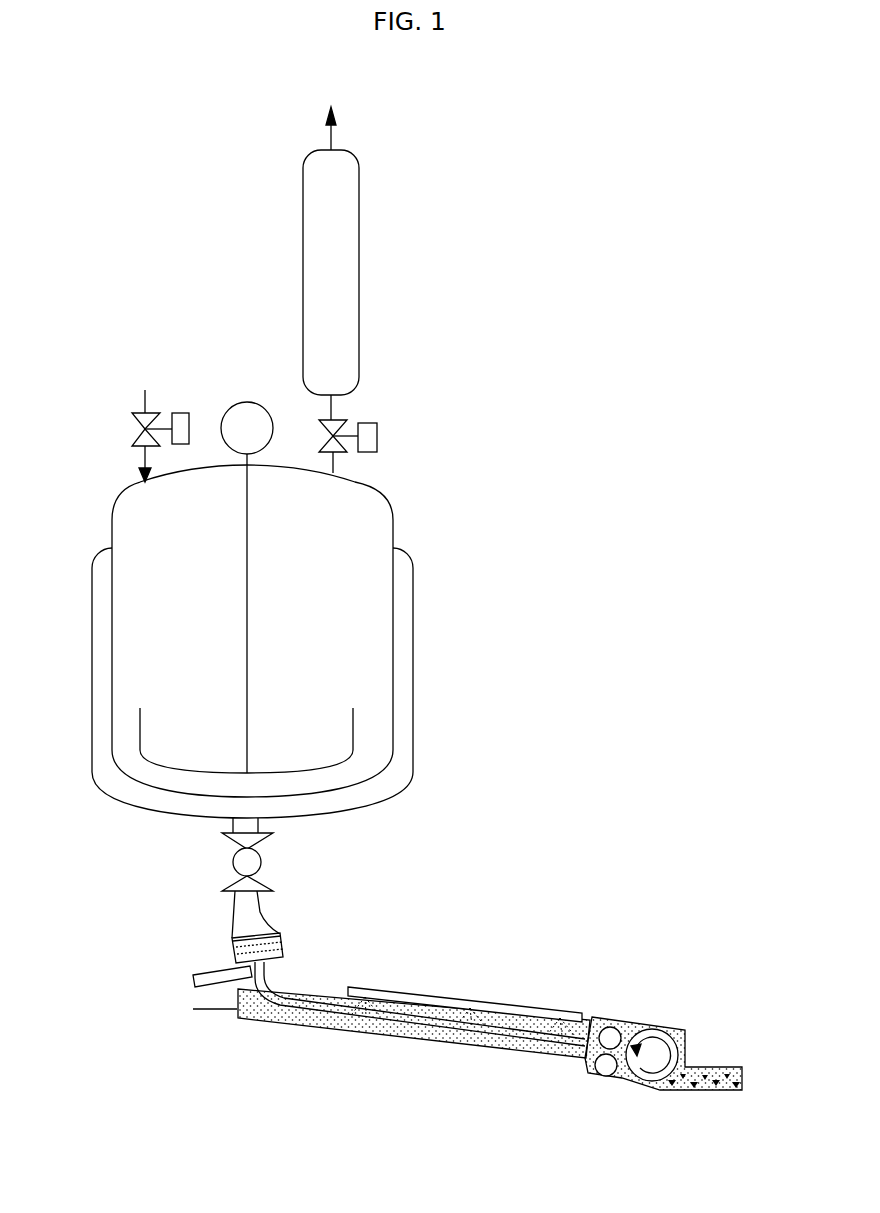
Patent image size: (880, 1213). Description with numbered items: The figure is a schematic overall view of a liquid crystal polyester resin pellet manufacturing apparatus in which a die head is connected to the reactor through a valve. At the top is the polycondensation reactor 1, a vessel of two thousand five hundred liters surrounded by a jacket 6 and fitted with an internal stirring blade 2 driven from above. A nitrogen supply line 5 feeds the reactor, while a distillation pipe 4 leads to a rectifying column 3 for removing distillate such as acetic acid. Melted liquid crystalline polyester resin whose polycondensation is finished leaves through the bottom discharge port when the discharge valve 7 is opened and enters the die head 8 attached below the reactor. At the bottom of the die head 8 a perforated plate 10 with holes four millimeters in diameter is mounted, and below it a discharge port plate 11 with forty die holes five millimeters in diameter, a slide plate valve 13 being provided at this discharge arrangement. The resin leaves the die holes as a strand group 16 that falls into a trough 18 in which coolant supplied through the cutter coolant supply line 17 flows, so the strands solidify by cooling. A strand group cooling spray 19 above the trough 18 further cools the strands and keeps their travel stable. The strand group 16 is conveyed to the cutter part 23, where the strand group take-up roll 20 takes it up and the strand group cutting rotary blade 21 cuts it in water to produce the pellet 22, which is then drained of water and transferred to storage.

The polycondensation reactor 1 is at (132, 505).
The stirring blade 2 is at (250, 565).
The rectifying column 3 is at (358, 270).
The distillation pipe 4 is at (335, 405).
The nitrogen supply line 5 is at (142, 398).
The jacket 6 is at (405, 672).
The discharge valve 7 is at (263, 862).
The die head 8 is at (270, 916).
The perforated plate 10 is at (232, 950).
The discharge port plate 11 is at (285, 945).
The slide plate valve 13 is at (193, 980).
The strand group 16 is at (267, 973).
The cutter coolant supply line 17 is at (200, 1012).
The trough 18 is at (295, 1023).
The strand group cooling spray 19 is at (440, 995).
The strand group take-up roll 20 is at (612, 1027).
The strand group cutting rotary blade 21 is at (656, 1030).
The pellet 22 is at (700, 1092).
The cutter part 23 is at (688, 1042).